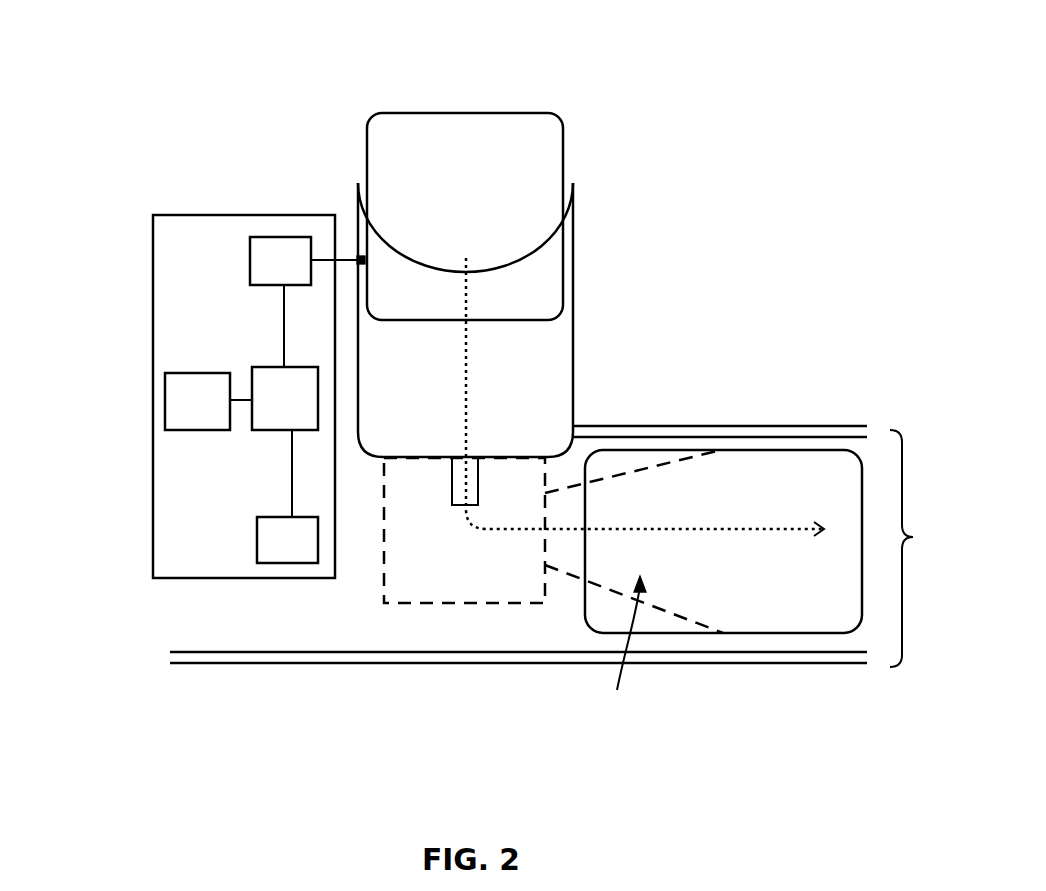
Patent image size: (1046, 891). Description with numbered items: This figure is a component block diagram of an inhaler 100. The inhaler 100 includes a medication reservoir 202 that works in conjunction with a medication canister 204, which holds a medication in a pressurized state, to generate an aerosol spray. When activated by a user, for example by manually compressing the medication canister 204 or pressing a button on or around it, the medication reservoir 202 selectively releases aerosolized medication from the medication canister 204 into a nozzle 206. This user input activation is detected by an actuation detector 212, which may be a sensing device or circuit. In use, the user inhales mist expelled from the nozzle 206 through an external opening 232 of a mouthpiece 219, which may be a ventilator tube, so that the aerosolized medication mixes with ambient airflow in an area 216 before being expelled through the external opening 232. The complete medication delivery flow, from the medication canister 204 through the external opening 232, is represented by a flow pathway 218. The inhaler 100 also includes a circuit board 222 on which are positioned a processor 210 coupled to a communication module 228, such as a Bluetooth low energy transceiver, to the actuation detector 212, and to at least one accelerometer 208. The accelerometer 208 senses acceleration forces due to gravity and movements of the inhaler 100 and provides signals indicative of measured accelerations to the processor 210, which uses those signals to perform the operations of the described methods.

The inhaler 100 is at (718, 131).
The medication reservoir 202 is at (573, 297).
The medication canister 204 is at (565, 158).
The nozzle 206 is at (505, 604).
The accelerometer 208 is at (287, 540).
The processor 210 is at (285, 398).
The actuation detector 212 is at (307, 261).
The area 216 is at (620, 647).
The flow pathway 218 is at (645, 410).
The mouthpiece 219 is at (800, 426).
The circuit board 222 is at (153, 280).
The communication module 228 is at (222, 432).
The external opening 232 is at (792, 635).